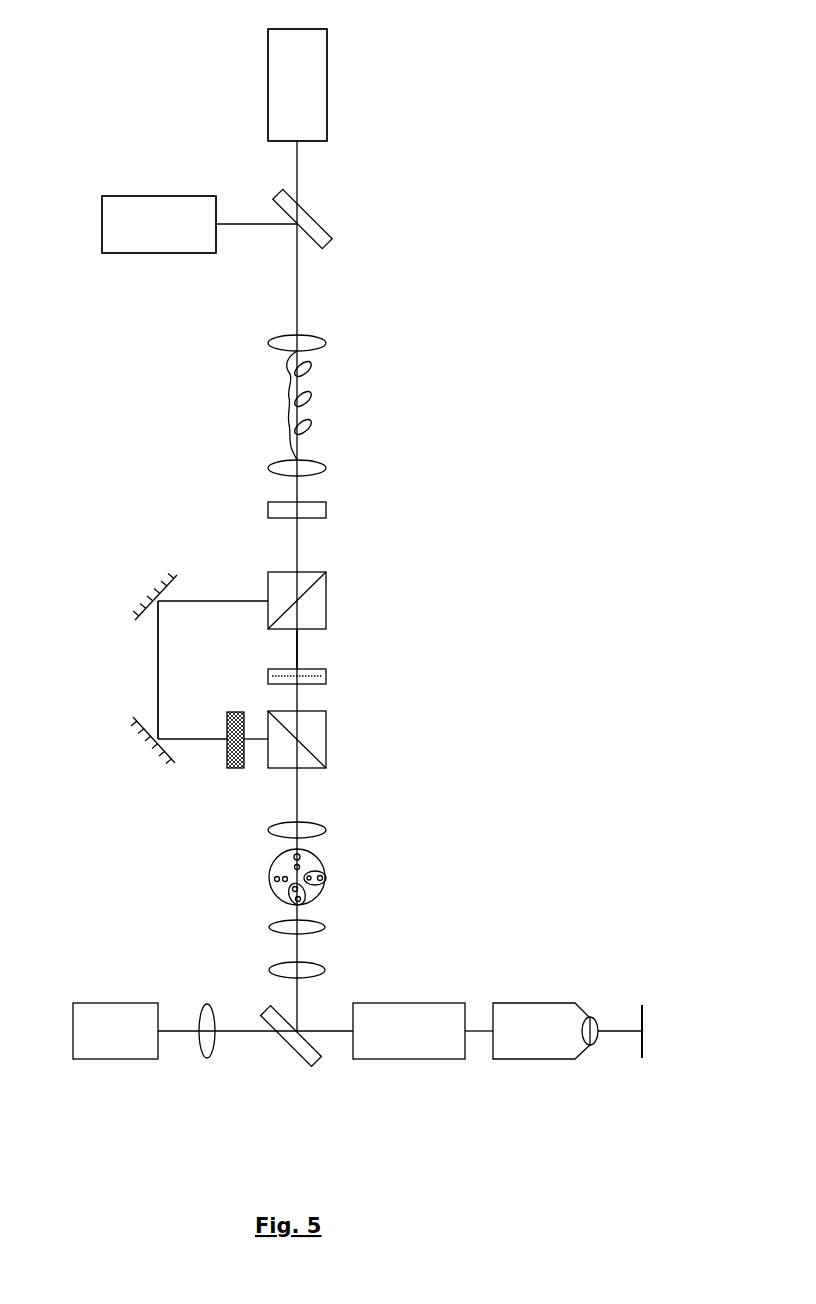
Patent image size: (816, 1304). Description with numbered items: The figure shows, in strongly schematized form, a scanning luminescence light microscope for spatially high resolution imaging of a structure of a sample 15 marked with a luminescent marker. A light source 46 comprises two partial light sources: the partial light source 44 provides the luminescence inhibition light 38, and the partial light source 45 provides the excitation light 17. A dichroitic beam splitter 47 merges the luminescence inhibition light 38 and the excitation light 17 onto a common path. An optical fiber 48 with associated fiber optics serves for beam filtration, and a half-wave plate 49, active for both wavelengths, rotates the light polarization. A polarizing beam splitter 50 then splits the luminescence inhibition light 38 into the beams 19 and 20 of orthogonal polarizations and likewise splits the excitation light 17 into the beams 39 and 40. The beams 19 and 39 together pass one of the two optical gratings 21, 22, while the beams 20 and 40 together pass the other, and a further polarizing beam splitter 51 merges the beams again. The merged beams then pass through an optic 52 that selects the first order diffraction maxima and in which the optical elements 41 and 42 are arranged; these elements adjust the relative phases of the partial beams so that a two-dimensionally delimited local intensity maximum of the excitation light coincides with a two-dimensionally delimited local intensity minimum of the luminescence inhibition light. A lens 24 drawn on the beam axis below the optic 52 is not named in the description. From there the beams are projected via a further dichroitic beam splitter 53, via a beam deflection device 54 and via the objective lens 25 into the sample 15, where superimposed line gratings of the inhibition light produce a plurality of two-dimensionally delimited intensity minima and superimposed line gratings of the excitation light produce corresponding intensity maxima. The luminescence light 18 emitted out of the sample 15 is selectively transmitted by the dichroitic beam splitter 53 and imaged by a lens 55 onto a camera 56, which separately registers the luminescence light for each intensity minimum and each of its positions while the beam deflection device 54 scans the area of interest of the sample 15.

The sample 15 is at (643, 1005).
The excitation light 17 is at (242, 222).
The luminescence light 18 is at (180, 1035).
The beam of luminescence inhibition light 19 is at (157, 663).
The beam of luminescence inhibition light 20 is at (299, 655).
The optical grating 21 is at (230, 768).
The optical grating 22 is at (326, 678).
The objective lens 24 is at (326, 970).
The objective lens 25 is at (537, 1000).
The luminescence inhibition light 38 is at (298, 178).
The beam of excitation light 39 is at (157, 663).
The beam of excitation light 40 is at (360, 647).
The optical element 41 is at (323, 876).
The optical element 42 is at (305, 895).
The partial light source 44 is at (328, 79).
The partial light source 45 is at (102, 220).
The light source 46 is at (158, 178).
The dichroitic beam splitter 47 is at (313, 220).
The optical fiber 48 is at (282, 393).
The λ/2 plate 49 is at (328, 508).
The polarizing beam splitter 50 is at (326, 595).
The further polarizing beam splitter 51 is at (326, 740).
The optic 52 is at (265, 895).
The further dichroitic beam splitter 53 is at (263, 1013).
The beam deflection device 54 is at (428, 1000).
The lens 55 is at (210, 1053).
The camera 56 is at (104, 1062).